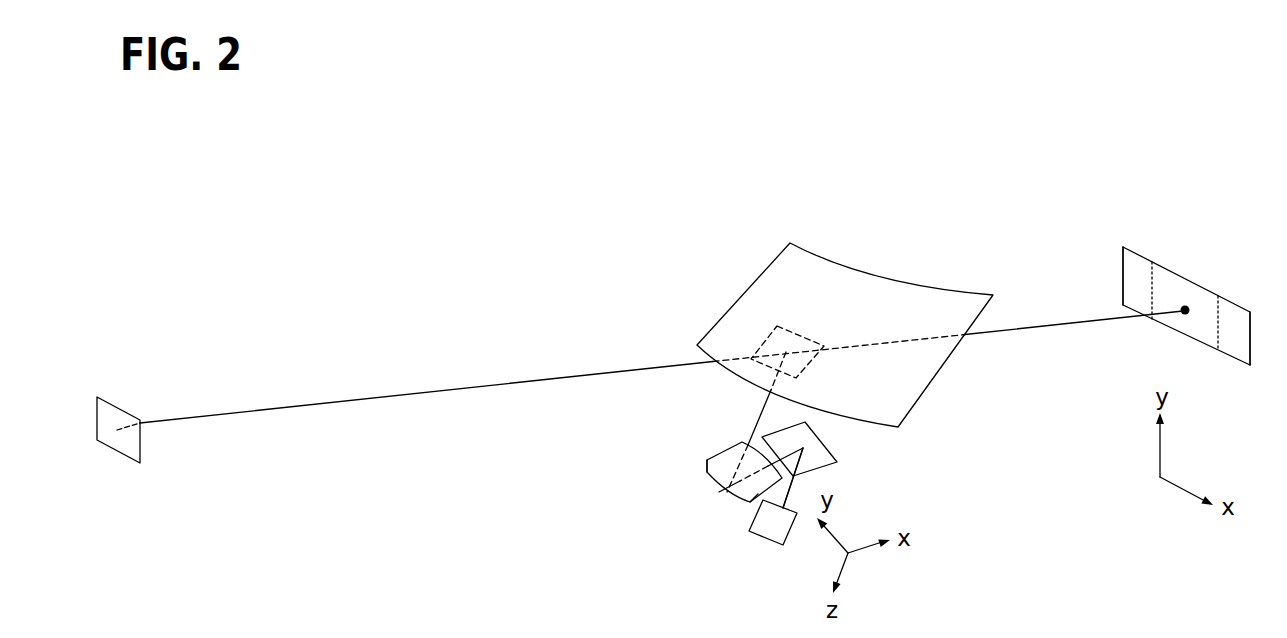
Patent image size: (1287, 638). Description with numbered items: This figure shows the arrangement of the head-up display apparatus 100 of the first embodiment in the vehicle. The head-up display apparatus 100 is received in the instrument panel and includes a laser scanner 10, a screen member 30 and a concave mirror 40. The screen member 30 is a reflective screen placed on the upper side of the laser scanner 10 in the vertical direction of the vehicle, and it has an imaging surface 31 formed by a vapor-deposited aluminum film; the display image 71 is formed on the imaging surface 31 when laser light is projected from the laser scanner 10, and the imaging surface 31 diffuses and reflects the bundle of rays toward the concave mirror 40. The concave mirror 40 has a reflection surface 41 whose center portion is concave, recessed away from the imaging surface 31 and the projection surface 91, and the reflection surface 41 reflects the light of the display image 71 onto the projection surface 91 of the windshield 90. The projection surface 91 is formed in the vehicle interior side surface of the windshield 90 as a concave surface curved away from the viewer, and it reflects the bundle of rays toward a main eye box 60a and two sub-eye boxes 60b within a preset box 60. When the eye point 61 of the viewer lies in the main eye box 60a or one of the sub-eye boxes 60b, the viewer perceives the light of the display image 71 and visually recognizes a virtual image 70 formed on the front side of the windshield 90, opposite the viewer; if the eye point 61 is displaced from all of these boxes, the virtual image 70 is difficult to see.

The laser scanner 10 is at (763, 538).
The screen member 30 is at (822, 440).
The imaging surface 31 is at (822, 457).
The concave mirror 40 is at (707, 477).
The reflection surface 41 is at (714, 454).
The preset box 60 is at (1233, 300).
The main eye box 60a is at (1165, 293).
The sub-eye boxes 60b is at (1137, 280).
The eye point 61 is at (1189, 304).
The virtual image 70 is at (117, 452).
The display image 71 is at (797, 442).
The windshield 90 is at (922, 285).
The projection surface 91 is at (813, 342).
The head-up display apparatus 100 is at (626, 446).